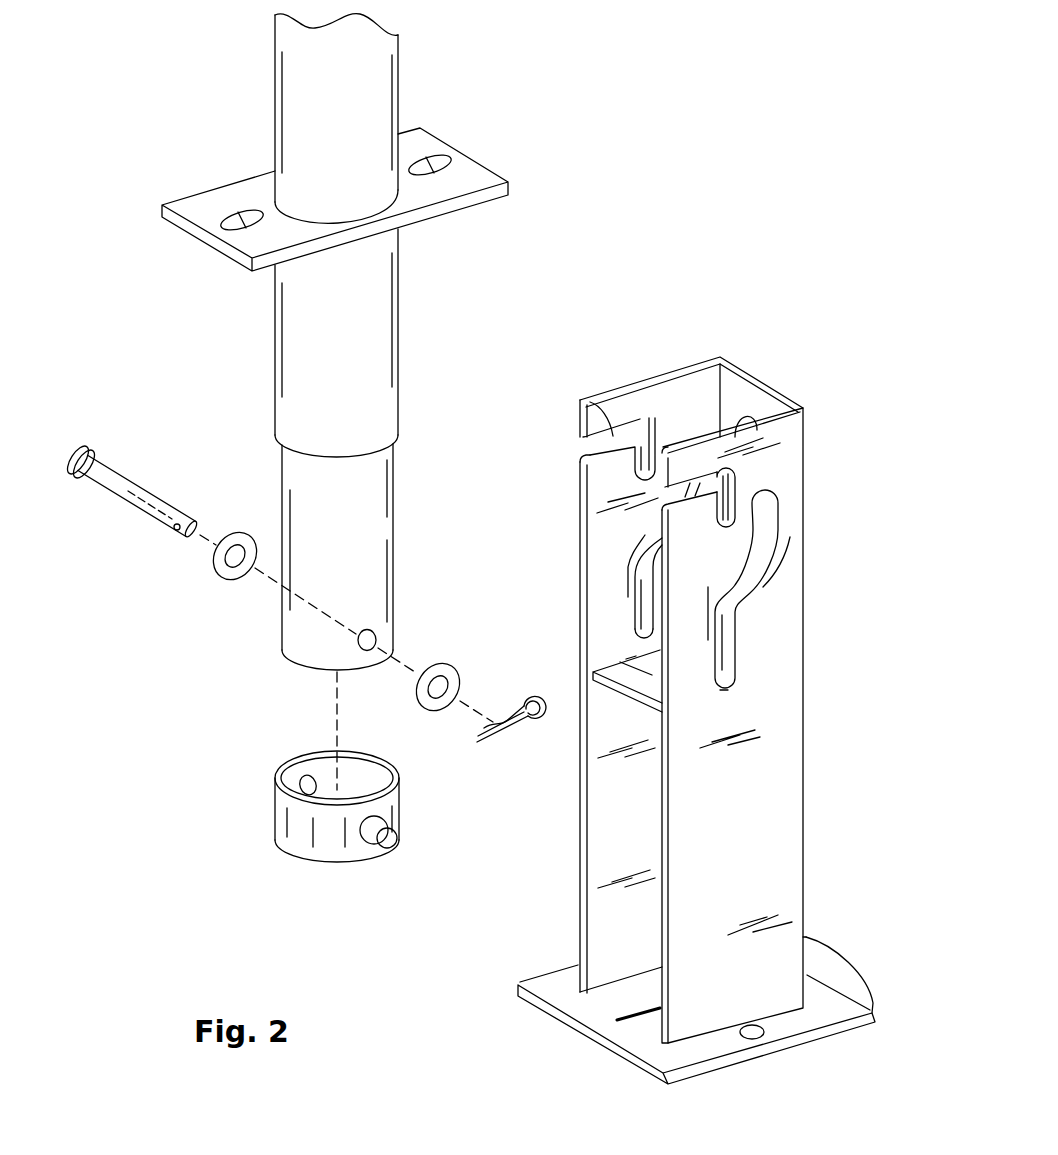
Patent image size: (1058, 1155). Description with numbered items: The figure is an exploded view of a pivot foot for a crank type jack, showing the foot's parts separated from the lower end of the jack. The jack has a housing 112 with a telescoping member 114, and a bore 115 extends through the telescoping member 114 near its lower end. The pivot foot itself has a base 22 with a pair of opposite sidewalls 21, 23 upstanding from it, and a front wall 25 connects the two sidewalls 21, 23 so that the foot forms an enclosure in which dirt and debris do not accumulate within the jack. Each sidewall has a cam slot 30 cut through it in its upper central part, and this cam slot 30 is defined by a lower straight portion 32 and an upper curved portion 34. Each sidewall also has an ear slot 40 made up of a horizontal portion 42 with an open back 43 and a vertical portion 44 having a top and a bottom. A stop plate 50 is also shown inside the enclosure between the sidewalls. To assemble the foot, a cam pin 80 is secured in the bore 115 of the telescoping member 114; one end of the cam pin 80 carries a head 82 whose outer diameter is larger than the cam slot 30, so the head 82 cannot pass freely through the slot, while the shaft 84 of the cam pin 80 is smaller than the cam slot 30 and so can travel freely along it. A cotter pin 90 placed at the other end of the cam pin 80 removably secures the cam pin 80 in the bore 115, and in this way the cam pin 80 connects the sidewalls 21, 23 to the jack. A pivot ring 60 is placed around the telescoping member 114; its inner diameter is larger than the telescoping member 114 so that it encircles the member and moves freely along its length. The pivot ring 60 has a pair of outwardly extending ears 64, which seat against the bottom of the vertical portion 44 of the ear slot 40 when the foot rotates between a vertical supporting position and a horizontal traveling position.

The sidewall 21 is at (763, 725).
The base 22 is at (560, 1020).
The sidewall 23 is at (568, 655).
The front wall 25 is at (757, 380).
The cam slot 30 is at (735, 695).
The lower straight portion 32 is at (623, 601).
The upper curved portion 34 is at (770, 575).
The ear slot 40 is at (650, 417).
The horizontal portion 42 is at (588, 404).
The open back 43 is at (585, 432).
The vertical portion 44 is at (740, 480).
The stop plate 50 is at (625, 690).
The pivot ring 60 is at (285, 846).
The ears 64 is at (372, 836).
The cam pin 80 is at (130, 468).
The head 82 is at (85, 447).
The shaft 84 is at (118, 493).
The cotter pin 90 is at (510, 713).
The housing 112 is at (397, 330).
The telescoping member 114 is at (393, 545).
The bore 115 is at (355, 643).